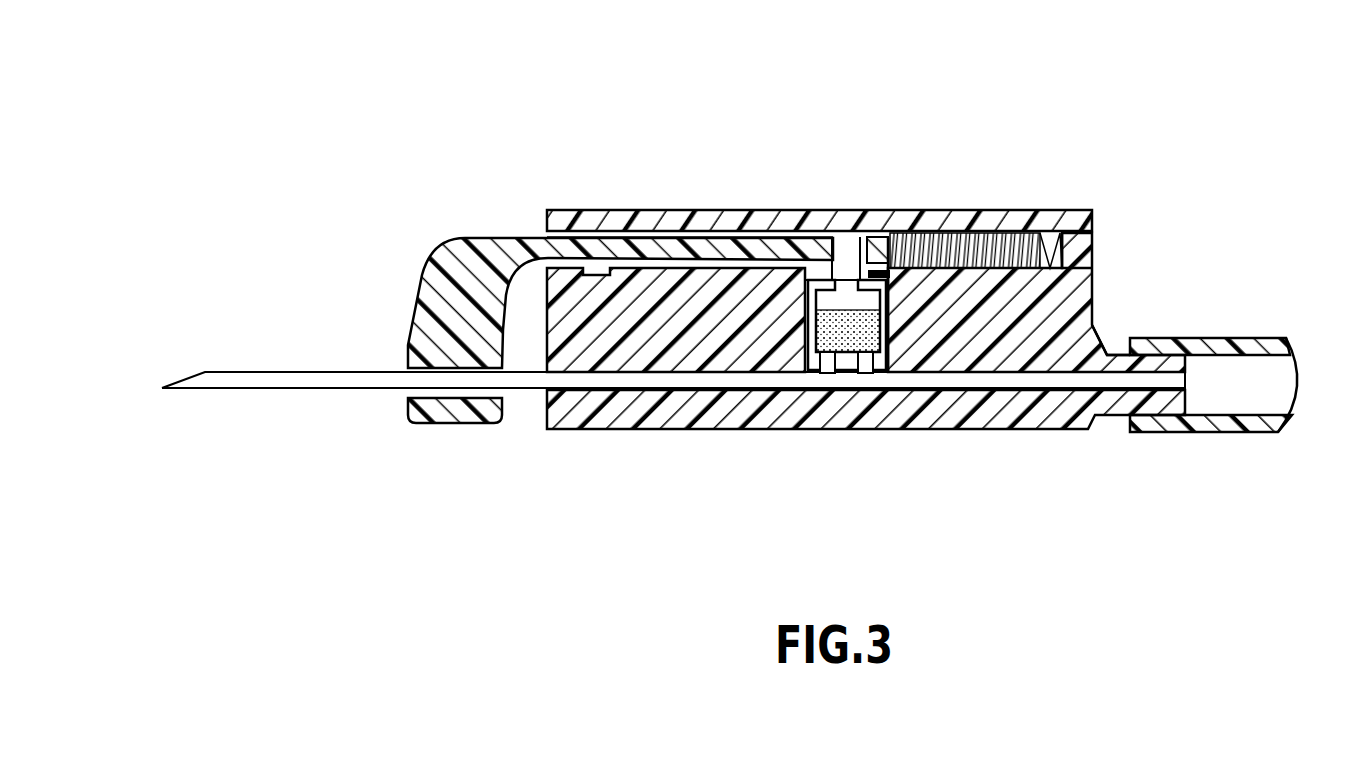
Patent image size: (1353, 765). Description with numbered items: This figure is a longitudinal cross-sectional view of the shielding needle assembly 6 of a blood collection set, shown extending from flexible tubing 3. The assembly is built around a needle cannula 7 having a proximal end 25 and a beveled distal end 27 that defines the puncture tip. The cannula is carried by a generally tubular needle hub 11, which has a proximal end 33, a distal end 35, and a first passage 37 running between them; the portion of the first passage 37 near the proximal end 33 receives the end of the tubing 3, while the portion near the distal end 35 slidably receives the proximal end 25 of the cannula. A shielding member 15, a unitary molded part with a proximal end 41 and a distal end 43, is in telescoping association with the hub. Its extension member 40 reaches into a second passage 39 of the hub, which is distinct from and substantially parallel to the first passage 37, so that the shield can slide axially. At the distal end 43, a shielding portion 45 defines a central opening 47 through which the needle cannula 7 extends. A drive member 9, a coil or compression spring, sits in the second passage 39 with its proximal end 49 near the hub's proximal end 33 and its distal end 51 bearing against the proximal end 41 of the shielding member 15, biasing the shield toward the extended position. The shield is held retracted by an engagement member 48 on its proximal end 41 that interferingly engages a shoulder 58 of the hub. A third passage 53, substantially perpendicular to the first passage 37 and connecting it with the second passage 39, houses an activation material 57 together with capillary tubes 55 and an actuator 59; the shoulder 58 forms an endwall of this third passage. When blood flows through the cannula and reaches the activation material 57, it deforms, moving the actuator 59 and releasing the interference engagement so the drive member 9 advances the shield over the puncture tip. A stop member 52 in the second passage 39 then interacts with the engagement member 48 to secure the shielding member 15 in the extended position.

The flexible tubing 3 is at (1245, 338).
The shielding needle assembly 6 is at (667, 122).
The needle cannula 7 is at (383, 391).
The drive member 9 is at (973, 245).
The needle hub 11 is at (1040, 228).
The shielding member 15 is at (435, 248).
The proximal end of needle cannula 25 is at (805, 392).
The distal end of needle cannula 27 is at (190, 372).
The proximal end of needle hub 33 is at (1095, 318).
The distal end of needle hub 35 is at (547, 422).
The first passage 37 is at (958, 382).
The second passage 39 is at (547, 232).
The extension member 40 is at (722, 248).
The proximal end of shielding member 41 is at (868, 262).
The distal end of shielding member 43 is at (413, 313).
The shielding portion 45 is at (430, 323).
The central opening 47 is at (437, 396).
The engagement member 48 is at (806, 275).
The proximal end of drive member 49 is at (1062, 252).
The distal end of drive member 51 is at (884, 268).
The stop member 52 is at (598, 266).
The third passage 53 is at (873, 392).
The capillary tubes 55 is at (862, 375).
The activation material 57 is at (888, 343).
The shoulder 58 is at (828, 280).
The actuator 59 is at (890, 305).